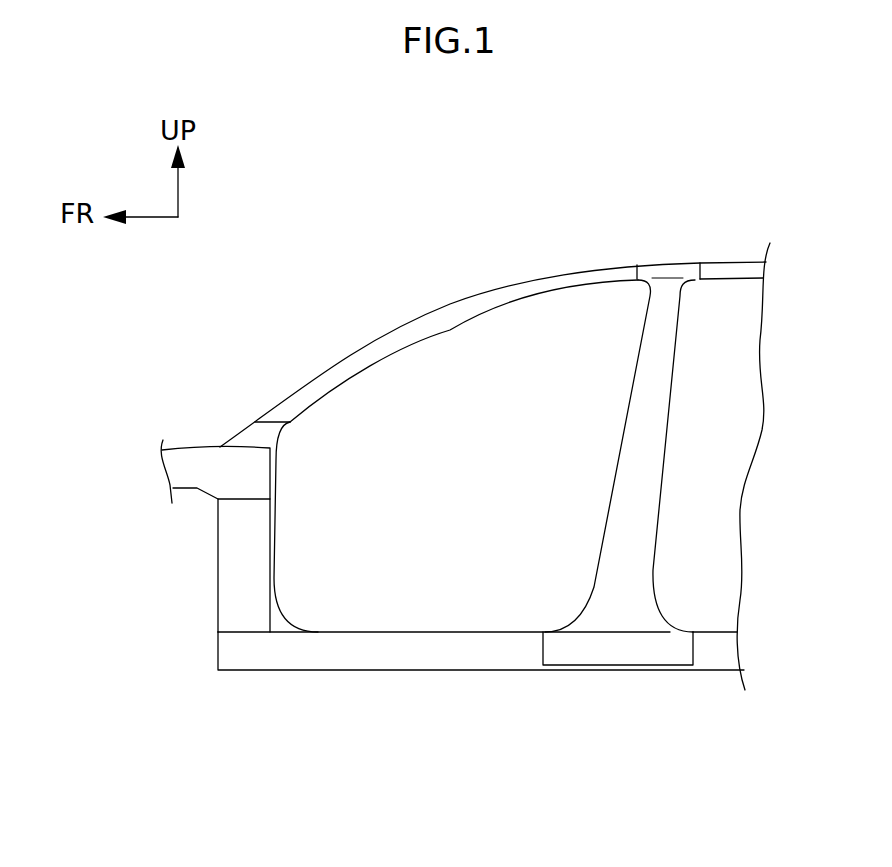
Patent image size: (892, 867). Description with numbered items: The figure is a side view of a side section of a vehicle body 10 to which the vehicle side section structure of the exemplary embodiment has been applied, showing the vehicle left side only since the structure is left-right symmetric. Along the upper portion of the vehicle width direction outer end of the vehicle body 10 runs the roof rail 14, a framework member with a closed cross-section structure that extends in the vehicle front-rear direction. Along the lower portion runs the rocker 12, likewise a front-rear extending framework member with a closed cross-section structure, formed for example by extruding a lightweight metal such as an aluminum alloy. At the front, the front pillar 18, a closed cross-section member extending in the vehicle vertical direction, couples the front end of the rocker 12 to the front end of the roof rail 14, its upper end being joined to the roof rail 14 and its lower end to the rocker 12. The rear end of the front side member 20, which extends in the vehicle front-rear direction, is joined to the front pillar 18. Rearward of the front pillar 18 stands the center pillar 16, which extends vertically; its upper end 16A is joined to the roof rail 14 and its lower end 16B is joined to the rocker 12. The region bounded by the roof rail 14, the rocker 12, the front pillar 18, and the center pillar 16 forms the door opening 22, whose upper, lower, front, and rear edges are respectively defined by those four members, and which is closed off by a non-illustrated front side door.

The vehicle body 10 is at (403, 299).
The rocker 12 is at (389, 683).
The roof rail 14 is at (547, 262).
The center pillar 16 is at (677, 453).
The upper end 16A is at (668, 262).
The lower end 16B is at (625, 672).
The front pillar 18 is at (206, 566).
The front side member 20 is at (178, 436).
The door opening 22 is at (468, 476).